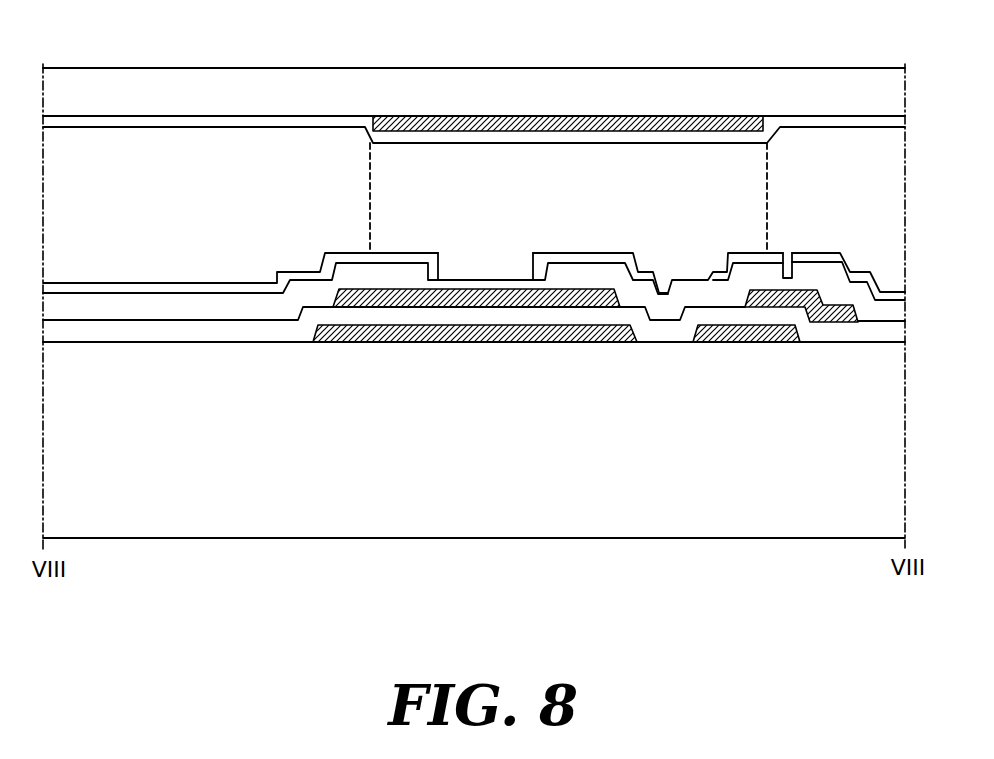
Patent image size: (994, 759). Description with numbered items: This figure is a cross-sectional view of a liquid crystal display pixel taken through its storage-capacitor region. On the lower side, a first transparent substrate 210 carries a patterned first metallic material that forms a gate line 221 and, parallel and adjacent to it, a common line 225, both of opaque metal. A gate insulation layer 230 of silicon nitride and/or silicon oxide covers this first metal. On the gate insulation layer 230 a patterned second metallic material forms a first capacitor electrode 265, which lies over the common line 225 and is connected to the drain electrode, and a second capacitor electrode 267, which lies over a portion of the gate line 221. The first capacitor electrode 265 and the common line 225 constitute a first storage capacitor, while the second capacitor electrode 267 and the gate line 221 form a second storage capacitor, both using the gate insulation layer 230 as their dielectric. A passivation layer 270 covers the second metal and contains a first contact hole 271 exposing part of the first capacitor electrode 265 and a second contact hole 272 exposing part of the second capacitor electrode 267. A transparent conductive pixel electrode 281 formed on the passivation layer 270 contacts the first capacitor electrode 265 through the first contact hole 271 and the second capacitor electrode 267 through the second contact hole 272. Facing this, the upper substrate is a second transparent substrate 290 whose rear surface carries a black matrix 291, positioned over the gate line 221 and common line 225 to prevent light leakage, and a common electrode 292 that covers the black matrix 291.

The first transparent substrate 210 is at (495, 498).
The gate line 221 is at (748, 337).
The common line 225 is at (392, 335).
The gate insulation layer 230 is at (200, 333).
The first capacitor electrode 265 is at (537, 300).
The second capacitor electrode 267 is at (812, 287).
The passivation layer 270 is at (258, 305).
The first contact hole 271 is at (487, 260).
The second contact hole 272 is at (788, 250).
The pixel electrode 281 is at (343, 258).
The second transparent substrate 290 is at (624, 87).
The black matrix 291 is at (521, 118).
The common electrode 292 is at (268, 127).